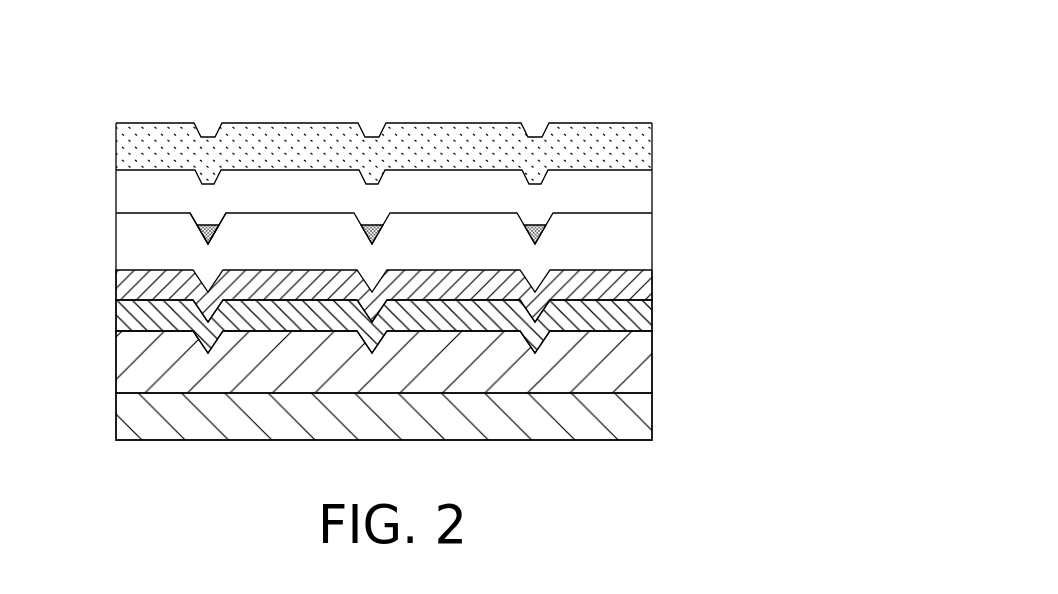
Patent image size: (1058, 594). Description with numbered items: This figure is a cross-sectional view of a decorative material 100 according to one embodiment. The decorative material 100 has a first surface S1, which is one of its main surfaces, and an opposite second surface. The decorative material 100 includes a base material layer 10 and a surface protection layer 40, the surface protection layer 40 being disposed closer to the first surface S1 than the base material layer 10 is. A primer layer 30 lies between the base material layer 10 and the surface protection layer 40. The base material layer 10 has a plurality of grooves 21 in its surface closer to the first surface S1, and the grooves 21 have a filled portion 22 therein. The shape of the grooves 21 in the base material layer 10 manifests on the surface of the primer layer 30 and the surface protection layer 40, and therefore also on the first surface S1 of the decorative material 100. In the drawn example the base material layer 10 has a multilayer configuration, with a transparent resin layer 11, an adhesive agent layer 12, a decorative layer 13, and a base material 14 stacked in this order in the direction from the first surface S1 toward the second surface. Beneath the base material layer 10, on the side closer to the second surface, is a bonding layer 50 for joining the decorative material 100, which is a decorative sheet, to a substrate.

The decorative material 100 is at (656, 24).
The first surface S1 is at (143, 122).
The surface protection layer 40 is at (652, 148).
The primer layer 30 is at (652, 188).
The base material layer 10 is at (711, 223).
The transparent resin layer 11 is at (652, 243).
The adhesive agent layer 12 is at (652, 283).
The decorative layer 13 is at (652, 313).
The base material 14 is at (652, 360).
The grooves 21 is at (222, 218).
The filled portion 22 is at (206, 243).
The bonding layer 50 is at (652, 418).